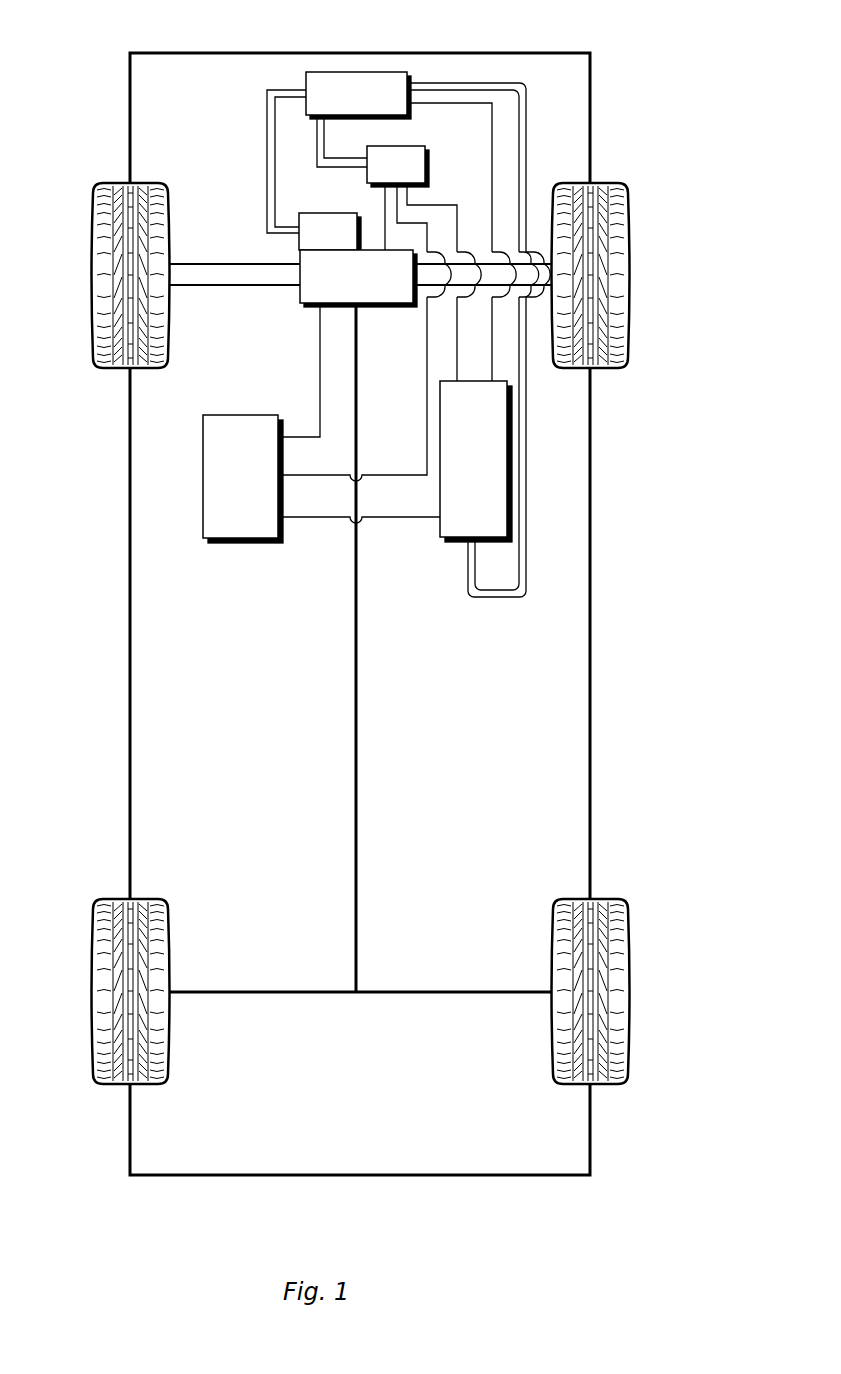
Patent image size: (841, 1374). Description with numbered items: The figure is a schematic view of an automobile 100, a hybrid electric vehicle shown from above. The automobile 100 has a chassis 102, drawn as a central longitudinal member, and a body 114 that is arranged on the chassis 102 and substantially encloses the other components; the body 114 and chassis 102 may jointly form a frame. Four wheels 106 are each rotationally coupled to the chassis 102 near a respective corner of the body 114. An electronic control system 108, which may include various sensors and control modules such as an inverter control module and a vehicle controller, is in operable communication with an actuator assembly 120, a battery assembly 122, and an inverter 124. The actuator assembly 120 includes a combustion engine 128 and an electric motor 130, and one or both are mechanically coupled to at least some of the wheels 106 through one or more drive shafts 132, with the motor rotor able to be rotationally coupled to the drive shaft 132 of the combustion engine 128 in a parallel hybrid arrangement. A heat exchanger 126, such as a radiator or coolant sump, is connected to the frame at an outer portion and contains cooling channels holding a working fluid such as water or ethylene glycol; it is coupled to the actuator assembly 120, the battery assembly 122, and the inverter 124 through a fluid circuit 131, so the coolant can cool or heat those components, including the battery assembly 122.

The automobile 100 is at (628, 90).
The chassis 102 is at (355, 590).
The wheels 106 is at (97, 184).
The electronic control system 108 is at (203, 432).
The body 114 is at (130, 516).
The actuator assembly 120 is at (334, 304).
The battery assembly 122 is at (447, 540).
The inverter 124 is at (412, 199).
The heat exchanger 126 is at (350, 72).
The combustion engine 128 is at (330, 233).
The electric motor 130 is at (300, 305).
The fluid circuit 131 is at (470, 83).
The drive shaft 132 is at (232, 264).